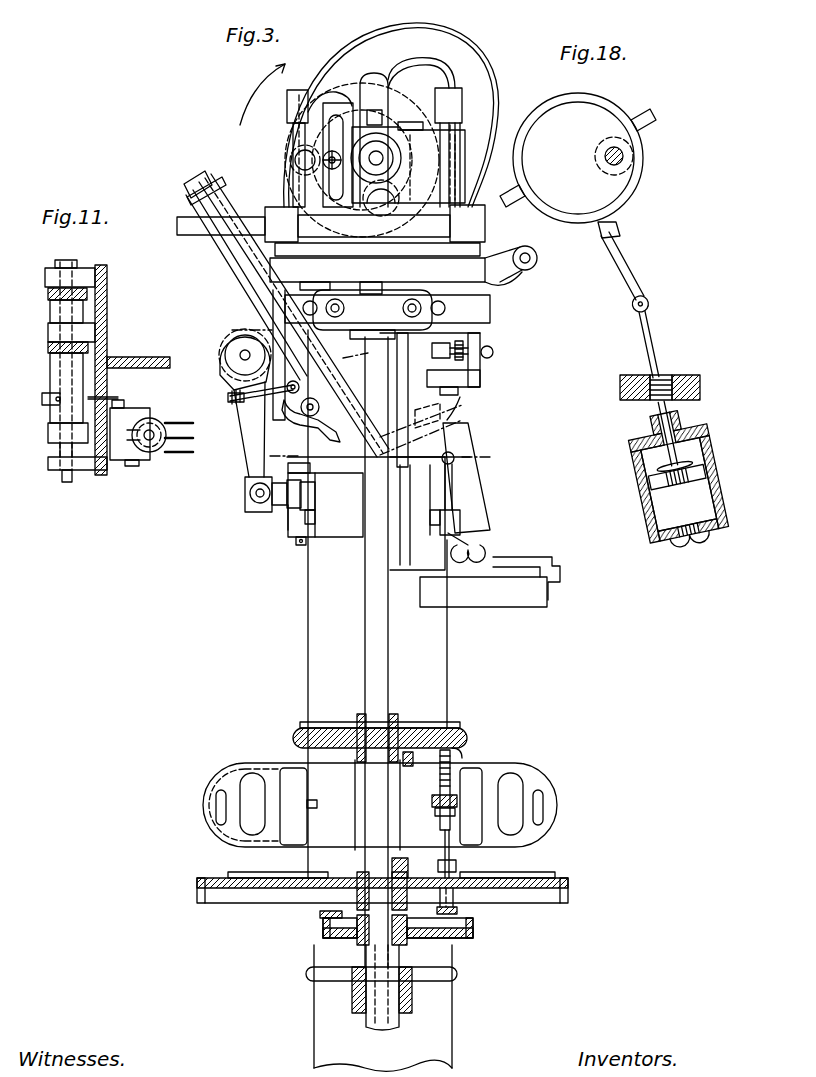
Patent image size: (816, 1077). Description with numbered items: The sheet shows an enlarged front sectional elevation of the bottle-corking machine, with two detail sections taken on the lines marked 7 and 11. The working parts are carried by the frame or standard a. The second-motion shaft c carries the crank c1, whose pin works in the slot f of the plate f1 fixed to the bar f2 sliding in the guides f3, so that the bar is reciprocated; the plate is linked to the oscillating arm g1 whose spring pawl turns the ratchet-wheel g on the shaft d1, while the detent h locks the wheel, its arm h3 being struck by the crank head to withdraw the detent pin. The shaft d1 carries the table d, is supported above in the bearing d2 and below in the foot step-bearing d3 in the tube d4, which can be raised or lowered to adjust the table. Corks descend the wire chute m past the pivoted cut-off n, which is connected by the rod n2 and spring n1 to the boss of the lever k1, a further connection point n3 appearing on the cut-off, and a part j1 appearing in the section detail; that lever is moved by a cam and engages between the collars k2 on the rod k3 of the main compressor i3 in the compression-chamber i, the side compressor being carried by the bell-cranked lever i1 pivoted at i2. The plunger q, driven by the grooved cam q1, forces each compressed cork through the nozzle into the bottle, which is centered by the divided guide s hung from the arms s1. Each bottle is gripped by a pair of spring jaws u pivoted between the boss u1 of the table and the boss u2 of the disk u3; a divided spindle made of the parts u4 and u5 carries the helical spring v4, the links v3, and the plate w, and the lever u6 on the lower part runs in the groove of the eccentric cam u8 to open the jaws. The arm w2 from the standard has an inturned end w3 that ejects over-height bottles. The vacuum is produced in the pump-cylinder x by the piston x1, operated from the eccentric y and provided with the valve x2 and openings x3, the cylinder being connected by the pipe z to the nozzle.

In FIG. 3, the grooved cam q1 is at (484, 96).
In FIG. 3, the arm of detent-lever h3 is at (452, 118).
In FIG. 3, the slot f is at (303, 90).
In FIG. 3, the plate f1 is at (330, 102).
In FIG. 3, the second-motion shaft c is at (380, 152).
In FIG. 18, the second-motion shaft c is at (606, 153).
In FIG. 3, the crank c1 is at (381, 198).
In FIG. 3, the main-compressor-operating lever k1 is at (295, 160).
In FIG. 11, the main-compressor-operating lever k1 is at (50, 362).
In FIG. 3, the guides f3 is at (281, 210).
In FIG. 3, the sliding bar f2 is at (185, 236).
In FIG. 3, the cork-chute m is at (237, 274).
In FIG. 11, the cork-chute m is at (174, 455).
In FIG. 3, the ratchet-wheel g is at (481, 272).
In FIG. 3, the detent h is at (498, 258).
In FIG. 3, the oscillating arm g1 is at (334, 258).
In FIG. 3, the bearing d2 is at (387, 314).
In FIG. 3, the section line 11 11 is at (310, 333).
In FIG. 3, the frame or standard a is at (318, 650).
In FIG. 11, the frame or standard a is at (140, 352).
In FIG. 18, the frame or standard a is at (682, 376).
In FIG. 3, the table shaft d1 is at (386, 660).
In FIG. 3, the plunger q is at (404, 379).
In FIG. 3, the spring n1 is at (232, 372).
In FIG. 11, the spring n1 is at (48, 404).
In FIG. 3, the rod n2 is at (240, 404).
In FIG. 11, the rod n2 is at (116, 398).
In FIG. 3, the roller pivot n3 is at (310, 416).
In FIG. 3, the cut-off n is at (324, 424).
In FIG. 11, the cut-off n is at (132, 445).
In FIG. 3, the section line 7 7 is at (382, 455).
In FIG. 3, the compression-chamber i is at (317, 500).
In FIG. 3, the main compressor i3 is at (312, 492).
In FIG. 3, the bell-cranked lever i1 is at (314, 518).
In FIG. 3, the pivot i2 is at (306, 541).
In FIG. 3, the collars k2 is at (262, 512).
In FIG. 3, the rod k3 is at (298, 518).
In FIG. 3, the divided guide s is at (405, 568).
In FIG. 3, the arms s1 is at (414, 496).
In FIG. 3, the pipe z is at (453, 498).
In FIG. 3, the pump-cylinder x is at (483, 508).
In FIG. 18, the pump-cylinder x is at (636, 498).
In FIG. 3, the inturned end of arm w3 is at (516, 558).
In FIG. 3, the arm w2 is at (516, 600).
In FIG. 3, the disk u3 is at (421, 728).
In FIG. 3, the spindle part u4 is at (458, 752).
In FIG. 3, the boss u2 is at (410, 764).
In FIG. 3, the helical spring v4 is at (455, 784).
In FIG. 3, the links v3 is at (455, 810).
In FIG. 3, the plate w is at (432, 824).
In FIG. 3, the spring jaws u is at (206, 812).
In FIG. 3, the boss u1 is at (406, 882).
In FIG. 3, the spindle part u5 is at (450, 866).
In FIG. 3, the table d is at (568, 890).
In FIG. 3, the foot step-bearing d3 is at (382, 891).
In FIG. 3, the arm or lever u6 is at (318, 914).
In FIG. 3, the eccentric cam u8 is at (474, 937).
In FIG. 3, the tube d4 is at (399, 1020).
In FIG. 11, the upper sleeve j1 is at (50, 305).
In FIG. 18, the eccentric y is at (578, 158).
In FIG. 18, the openings x3 is at (634, 438).
In FIG. 18, the valve x2 is at (695, 458).
In FIG. 18, the piston x1 is at (666, 484).